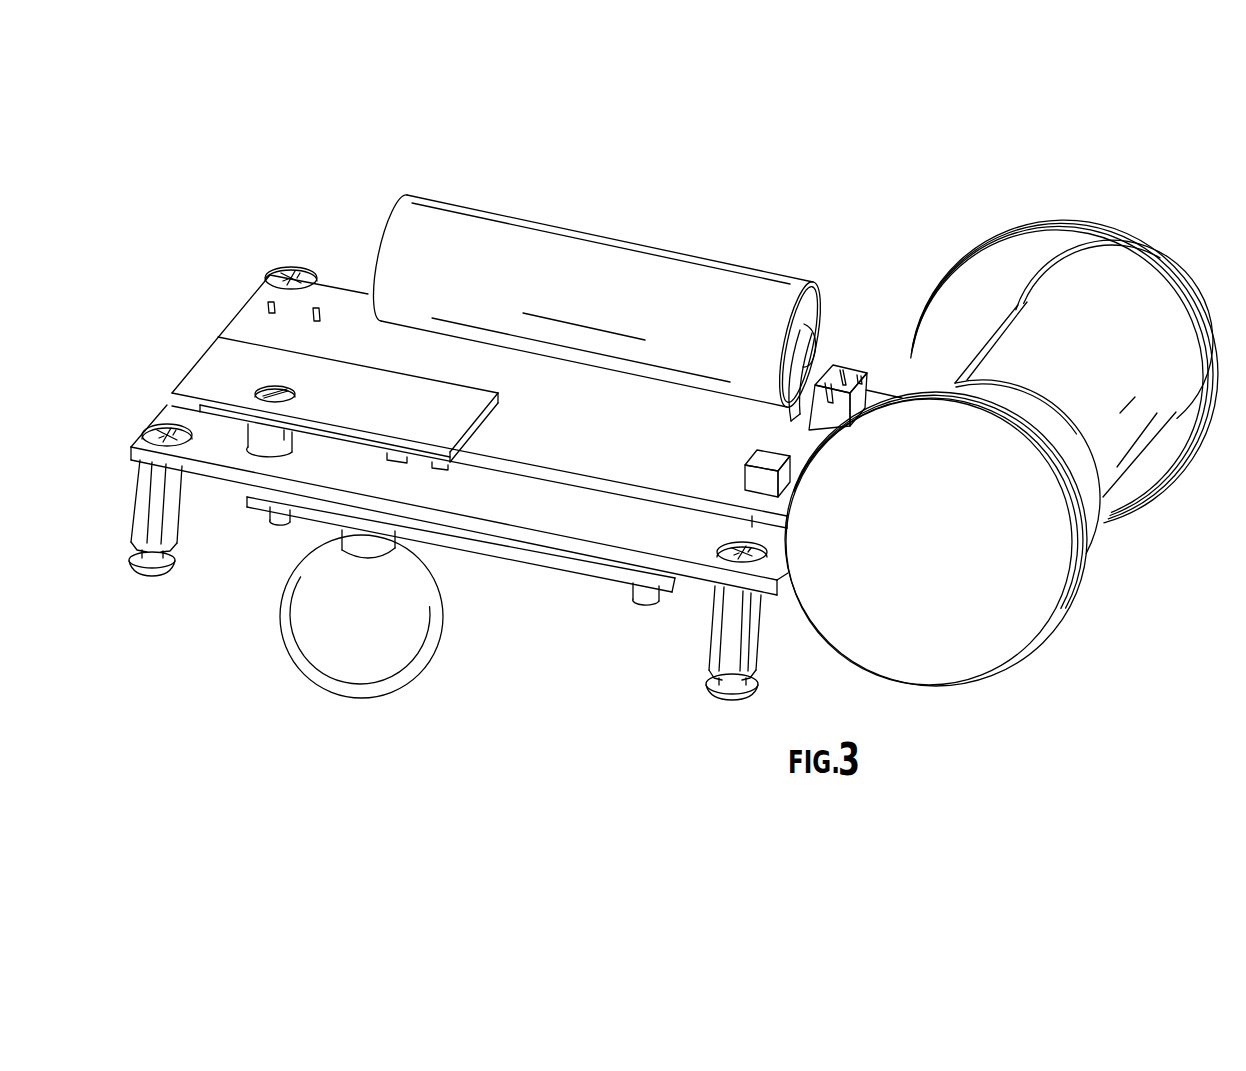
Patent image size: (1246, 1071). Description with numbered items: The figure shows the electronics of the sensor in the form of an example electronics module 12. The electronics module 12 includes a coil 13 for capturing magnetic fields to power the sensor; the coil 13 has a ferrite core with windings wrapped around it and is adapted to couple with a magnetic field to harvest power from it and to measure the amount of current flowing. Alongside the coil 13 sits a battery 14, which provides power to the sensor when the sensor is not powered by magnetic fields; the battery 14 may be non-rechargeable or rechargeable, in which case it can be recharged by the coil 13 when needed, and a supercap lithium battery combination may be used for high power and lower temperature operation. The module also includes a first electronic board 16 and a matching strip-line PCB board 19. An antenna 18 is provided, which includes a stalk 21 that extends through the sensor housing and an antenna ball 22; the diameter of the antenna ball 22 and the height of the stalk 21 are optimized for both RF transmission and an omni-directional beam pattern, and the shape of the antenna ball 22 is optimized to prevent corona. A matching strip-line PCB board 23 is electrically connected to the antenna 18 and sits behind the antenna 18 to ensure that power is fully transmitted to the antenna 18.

The electronics module 12 is at (872, 148).
The coil 13 is at (1156, 316).
The battery 14 is at (690, 281).
The first electronic board 16 is at (341, 308).
The antenna 18 is at (336, 668).
The matching strip-line PCB board 19 is at (220, 348).
The stalk 21 is at (355, 538).
The antenna ball 22 is at (387, 667).
The matching strip-line PCB board 23 is at (443, 422).